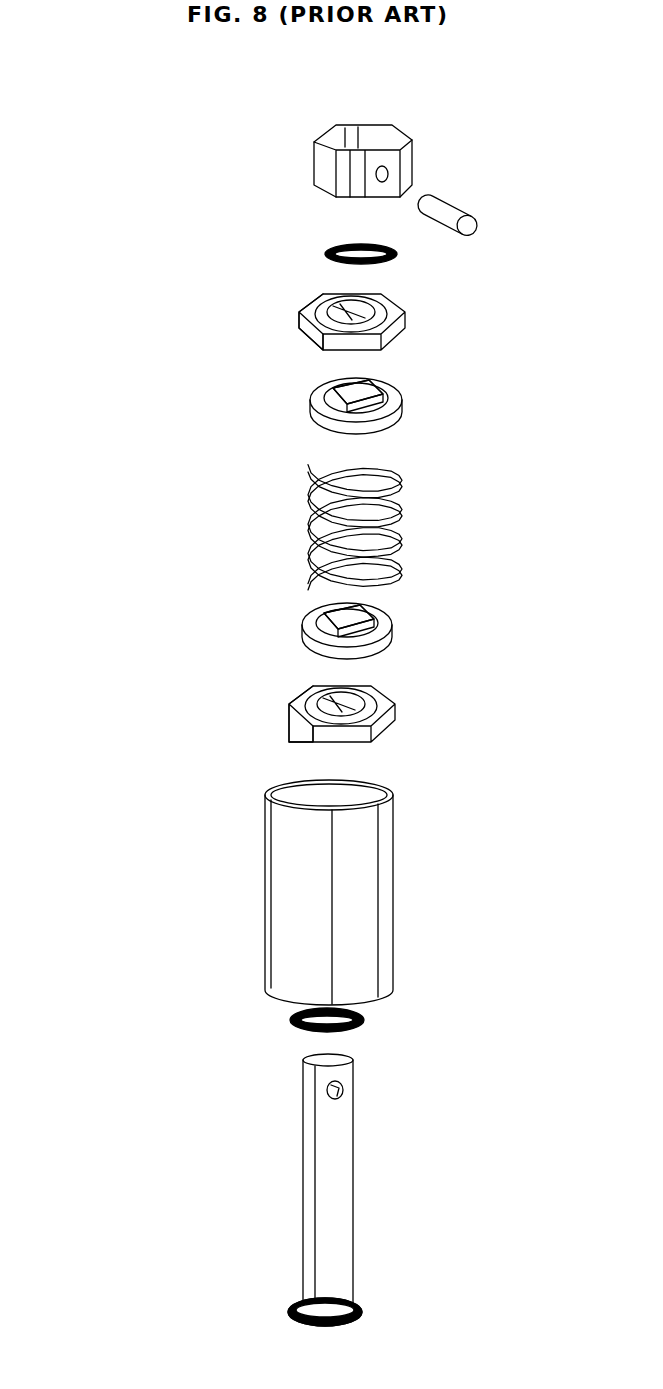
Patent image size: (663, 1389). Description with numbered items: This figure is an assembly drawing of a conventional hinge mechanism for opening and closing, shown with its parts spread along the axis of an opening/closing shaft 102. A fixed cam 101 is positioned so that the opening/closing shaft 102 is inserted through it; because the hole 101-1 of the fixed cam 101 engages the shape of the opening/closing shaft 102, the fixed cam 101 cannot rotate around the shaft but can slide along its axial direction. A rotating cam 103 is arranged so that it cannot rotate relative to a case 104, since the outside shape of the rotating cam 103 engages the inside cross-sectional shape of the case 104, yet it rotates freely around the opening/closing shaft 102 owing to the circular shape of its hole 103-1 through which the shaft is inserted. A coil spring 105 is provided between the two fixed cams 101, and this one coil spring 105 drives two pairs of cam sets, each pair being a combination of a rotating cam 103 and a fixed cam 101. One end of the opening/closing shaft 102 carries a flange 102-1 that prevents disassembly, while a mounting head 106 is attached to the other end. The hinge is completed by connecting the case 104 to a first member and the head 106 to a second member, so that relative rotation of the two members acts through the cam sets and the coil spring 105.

The fixed cam 101 is at (400, 420).
The hole 101-1 is at (323, 393).
The opening/closing shaft 102 is at (330, 1197).
The flange 102-1 is at (297, 1310).
The rotating cam 103 is at (397, 327).
The hole 103-1 is at (228, 150).
The case 104 is at (358, 923).
The coil spring 105 is at (312, 537).
The mounting head 106 is at (313, 165).